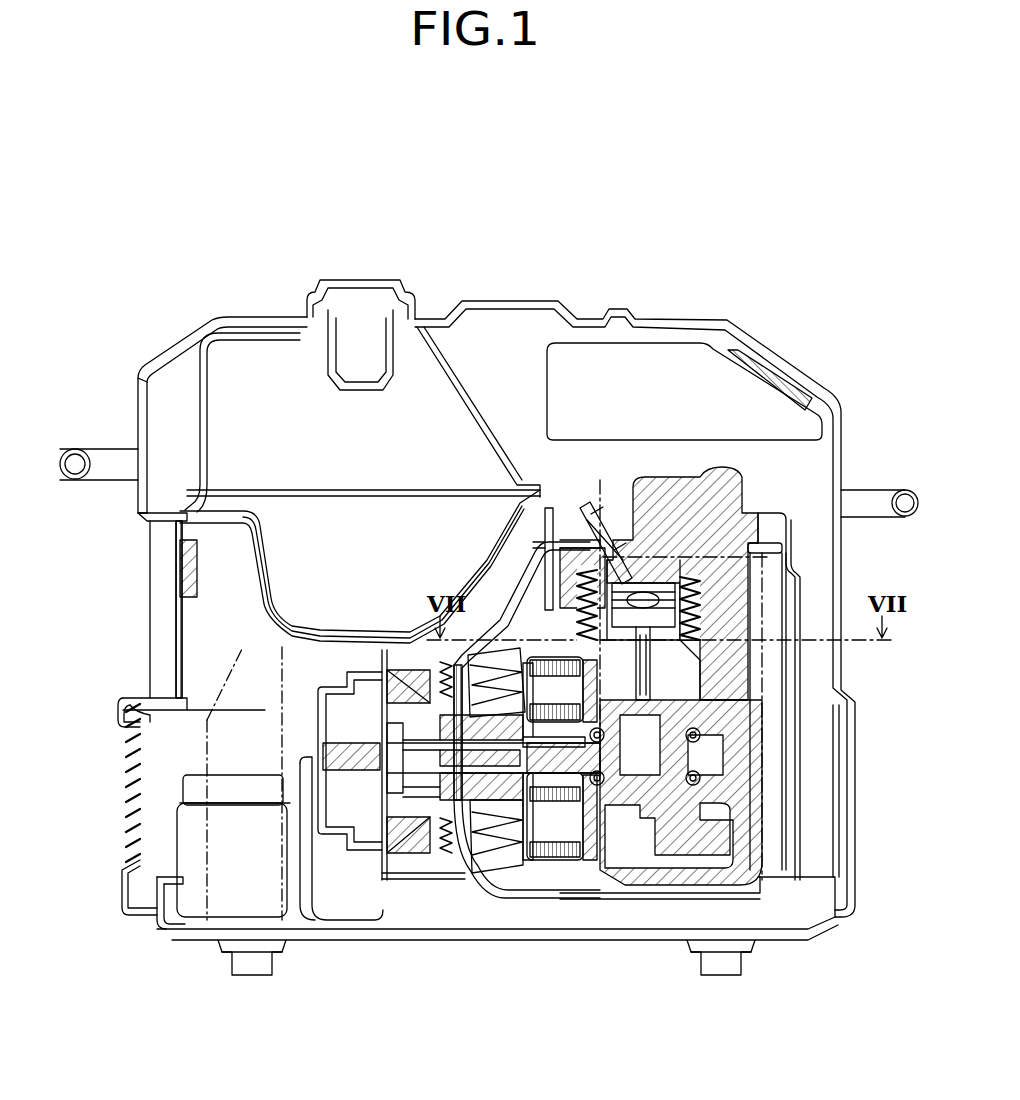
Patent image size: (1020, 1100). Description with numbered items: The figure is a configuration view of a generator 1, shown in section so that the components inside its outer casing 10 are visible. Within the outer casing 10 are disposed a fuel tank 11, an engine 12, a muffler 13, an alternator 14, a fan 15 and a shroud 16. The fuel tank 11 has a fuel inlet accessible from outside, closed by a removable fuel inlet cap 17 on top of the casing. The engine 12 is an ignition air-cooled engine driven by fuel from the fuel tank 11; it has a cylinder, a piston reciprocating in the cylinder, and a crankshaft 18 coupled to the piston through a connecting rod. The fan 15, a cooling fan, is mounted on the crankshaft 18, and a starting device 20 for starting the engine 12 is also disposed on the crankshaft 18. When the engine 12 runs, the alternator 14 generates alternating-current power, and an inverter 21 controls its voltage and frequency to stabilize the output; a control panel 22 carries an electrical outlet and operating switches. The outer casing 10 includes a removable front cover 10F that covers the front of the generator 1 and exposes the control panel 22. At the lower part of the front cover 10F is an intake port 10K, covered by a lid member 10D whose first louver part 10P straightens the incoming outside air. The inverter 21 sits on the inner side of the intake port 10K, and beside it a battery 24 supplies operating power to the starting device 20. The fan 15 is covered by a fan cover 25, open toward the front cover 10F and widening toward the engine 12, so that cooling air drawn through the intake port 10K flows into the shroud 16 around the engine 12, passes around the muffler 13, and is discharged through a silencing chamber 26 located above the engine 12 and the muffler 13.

The generator 1 is at (466, 107).
The outer casing 10 is at (778, 352).
The front cover 10F is at (147, 370).
The lid member 10D is at (118, 780).
The first louver part 10P is at (130, 862).
The intake port 10K is at (160, 875).
The fuel tank 11 is at (198, 367).
The engine 12 is at (742, 470).
The muffler 13 is at (765, 617).
The alternator 14 is at (553, 830).
The fan 15 is at (500, 795).
The shroud 16 is at (565, 560).
The fuel inlet cap 17 is at (347, 280).
The crankshaft 18 is at (588, 870).
The starting device 20 is at (360, 852).
The inverter 21 is at (125, 707).
The control panel 22 is at (176, 577).
The battery 24 is at (197, 893).
The fan cover 25 is at (480, 560).
The silencing chamber 26 is at (688, 370).